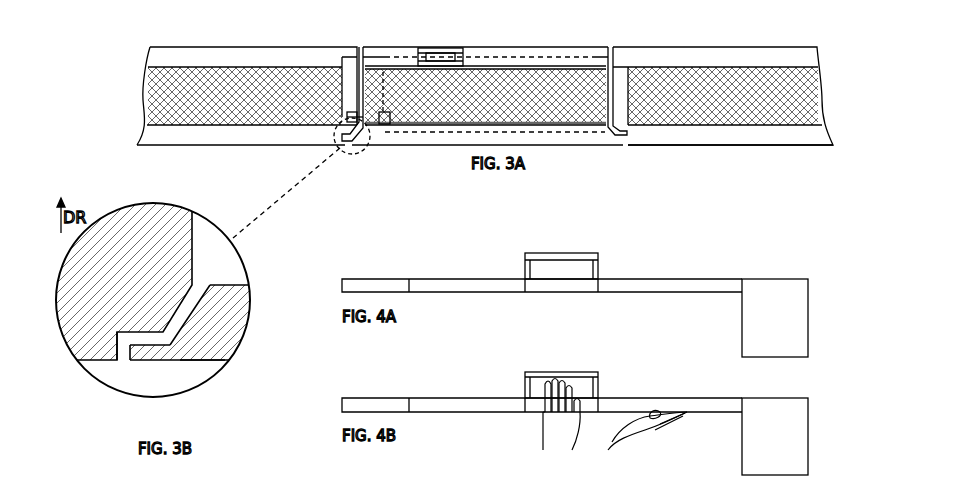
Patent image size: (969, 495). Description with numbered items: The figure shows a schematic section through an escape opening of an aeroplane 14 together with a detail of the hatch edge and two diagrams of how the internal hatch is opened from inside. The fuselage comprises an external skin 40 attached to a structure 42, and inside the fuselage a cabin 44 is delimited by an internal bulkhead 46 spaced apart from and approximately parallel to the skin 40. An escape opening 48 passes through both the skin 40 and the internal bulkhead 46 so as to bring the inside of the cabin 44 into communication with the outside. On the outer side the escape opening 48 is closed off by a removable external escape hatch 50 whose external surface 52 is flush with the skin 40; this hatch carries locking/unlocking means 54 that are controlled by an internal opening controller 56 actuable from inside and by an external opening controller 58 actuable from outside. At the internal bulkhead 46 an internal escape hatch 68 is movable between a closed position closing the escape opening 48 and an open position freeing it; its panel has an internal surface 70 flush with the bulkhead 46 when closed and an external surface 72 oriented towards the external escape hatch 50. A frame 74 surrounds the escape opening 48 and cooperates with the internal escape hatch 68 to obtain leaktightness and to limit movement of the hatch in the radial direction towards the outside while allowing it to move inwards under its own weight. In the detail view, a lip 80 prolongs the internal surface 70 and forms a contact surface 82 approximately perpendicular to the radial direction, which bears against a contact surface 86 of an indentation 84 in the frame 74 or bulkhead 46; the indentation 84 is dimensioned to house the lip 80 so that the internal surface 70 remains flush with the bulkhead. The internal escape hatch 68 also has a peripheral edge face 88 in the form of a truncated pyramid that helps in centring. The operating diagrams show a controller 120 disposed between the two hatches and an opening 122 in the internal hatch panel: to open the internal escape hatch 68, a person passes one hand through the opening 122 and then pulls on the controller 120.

In FIG. 3A, the floor panel assembly 14 is at (247, 72).
In FIG. 3A, the external skin 40 is at (676, 46).
In FIG. 3A, the structure 42 is at (347, 97).
In FIG. 3A, the cabin 44 is at (410, 178).
In FIG. 3B, the cabin 44 is at (168, 380).
In FIG. 3A, the internal bulkhead 46 is at (797, 145).
In FIG. 4A, the internal bulkhead 46 is at (375, 288).
In FIG. 4B, the internal bulkhead 46 is at (366, 406).
In FIG. 3A, the escape opening 48 is at (363, 97).
In FIG. 3A, the external escape hatch 50 is at (494, 47).
In FIG. 3A, the external surface 52 is at (546, 46).
In FIG. 3A, the locking/unlocking means 54 is at (354, 53).
In FIG. 3A, the internal opening controller 56 is at (437, 71).
In FIG. 3A, the external opening controller 58 is at (440, 48).
In FIG. 3A, the internal escape hatch 68 is at (453, 147).
In FIG. 3B, the internal escape hatch 68 is at (214, 360).
In FIG. 4A, the internal escape hatch 68 is at (452, 293).
In FIG. 4B, the internal escape hatch 68 is at (460, 413).
In FIG. 3A, the internal surface 70 is at (598, 146).
In FIG. 3B, the internal surface 70 is at (226, 358).
In FIG. 3A, the external surface 72 is at (542, 117).
In FIG. 3B, the external surface 72 is at (240, 285).
In FIG. 3B, the frame 74 is at (108, 252).
In FIG. 3B, the lip 80 is at (140, 353).
In FIG. 3B, the contact surface 82 is at (156, 345).
In FIG. 3B, the indentation 84 is at (125, 333).
In FIG. 3B, the contact surface 86 is at (150, 332).
In FIG. 3B, the peripheral edge face 88 is at (193, 312).
In FIG. 4A, the controller 120 is at (568, 253).
In FIG. 4B, the controller 120 is at (588, 373).
In FIG. 4A, the opening 122 is at (557, 290).
In FIG. 4B, the opening 122 is at (537, 410).